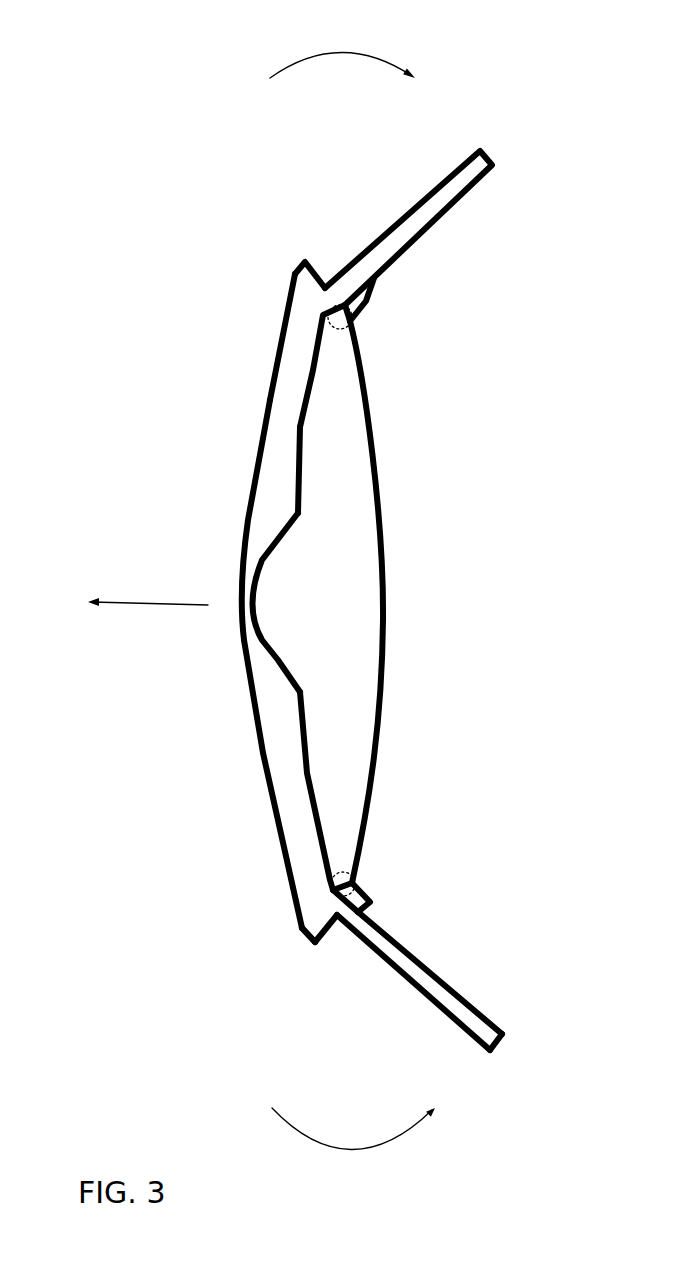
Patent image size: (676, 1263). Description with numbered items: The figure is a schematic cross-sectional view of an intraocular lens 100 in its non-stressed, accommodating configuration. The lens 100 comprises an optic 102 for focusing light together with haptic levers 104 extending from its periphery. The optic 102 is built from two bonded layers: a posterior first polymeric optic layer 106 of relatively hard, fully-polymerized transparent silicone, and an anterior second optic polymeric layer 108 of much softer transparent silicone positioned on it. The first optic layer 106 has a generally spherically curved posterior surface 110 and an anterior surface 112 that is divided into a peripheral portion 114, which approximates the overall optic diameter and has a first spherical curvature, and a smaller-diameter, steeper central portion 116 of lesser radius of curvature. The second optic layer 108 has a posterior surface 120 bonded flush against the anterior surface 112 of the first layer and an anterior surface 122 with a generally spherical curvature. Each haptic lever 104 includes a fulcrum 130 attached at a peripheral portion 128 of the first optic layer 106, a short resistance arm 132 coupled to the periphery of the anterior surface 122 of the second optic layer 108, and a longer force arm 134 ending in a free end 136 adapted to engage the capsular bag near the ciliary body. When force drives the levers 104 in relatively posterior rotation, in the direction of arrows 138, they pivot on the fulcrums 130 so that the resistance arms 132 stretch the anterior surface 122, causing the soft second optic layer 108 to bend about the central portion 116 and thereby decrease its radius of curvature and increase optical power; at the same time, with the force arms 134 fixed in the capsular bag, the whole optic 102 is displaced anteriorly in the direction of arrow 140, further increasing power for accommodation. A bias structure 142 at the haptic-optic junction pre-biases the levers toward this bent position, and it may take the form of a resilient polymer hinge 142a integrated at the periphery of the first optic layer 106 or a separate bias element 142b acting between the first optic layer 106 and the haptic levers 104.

The intraocular lens 100 is at (160, 217).
The optic 102 is at (265, 345).
The haptic lever 104 is at (411, 211).
The posterior first polymeric optic layer 106 is at (343, 610).
The anterior second optic polymeric layer 108 is at (268, 720).
The posterior surface of first optic layer 110 is at (380, 547).
The anterior surface of first optic layer 112 is at (300, 490).
The peripheral portion 114 is at (316, 360).
The central portion 116 is at (278, 660).
The posterior surface of second optic layer 120 is at (298, 760).
The anterior surface of second optic layer 122 is at (247, 533).
The peripheral portion of first optic layer 128 is at (357, 890).
The fulcrum 130 is at (330, 899).
The resistance arm 132 is at (317, 930).
The force arm 134 is at (470, 1013).
The free end 136 is at (498, 1023).
The arrows indicating direction of rotation 138 is at (352, 598).
The arrow indicating direction of displacement 140 is at (148, 618).
The bias structure 142 is at (368, 318).
The resilient polymer hinge 142a is at (352, 300).
The bias element 142b is at (380, 287).